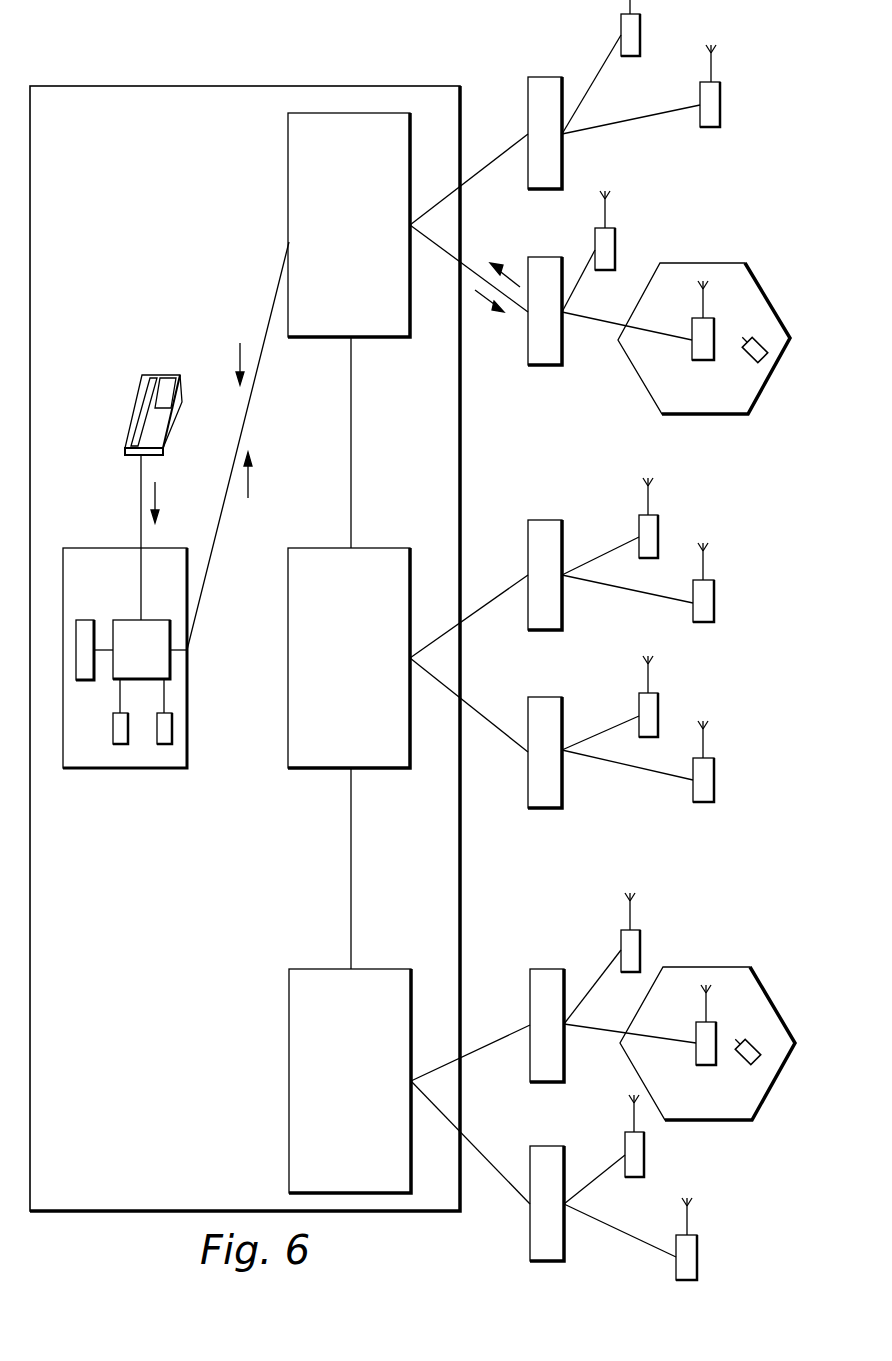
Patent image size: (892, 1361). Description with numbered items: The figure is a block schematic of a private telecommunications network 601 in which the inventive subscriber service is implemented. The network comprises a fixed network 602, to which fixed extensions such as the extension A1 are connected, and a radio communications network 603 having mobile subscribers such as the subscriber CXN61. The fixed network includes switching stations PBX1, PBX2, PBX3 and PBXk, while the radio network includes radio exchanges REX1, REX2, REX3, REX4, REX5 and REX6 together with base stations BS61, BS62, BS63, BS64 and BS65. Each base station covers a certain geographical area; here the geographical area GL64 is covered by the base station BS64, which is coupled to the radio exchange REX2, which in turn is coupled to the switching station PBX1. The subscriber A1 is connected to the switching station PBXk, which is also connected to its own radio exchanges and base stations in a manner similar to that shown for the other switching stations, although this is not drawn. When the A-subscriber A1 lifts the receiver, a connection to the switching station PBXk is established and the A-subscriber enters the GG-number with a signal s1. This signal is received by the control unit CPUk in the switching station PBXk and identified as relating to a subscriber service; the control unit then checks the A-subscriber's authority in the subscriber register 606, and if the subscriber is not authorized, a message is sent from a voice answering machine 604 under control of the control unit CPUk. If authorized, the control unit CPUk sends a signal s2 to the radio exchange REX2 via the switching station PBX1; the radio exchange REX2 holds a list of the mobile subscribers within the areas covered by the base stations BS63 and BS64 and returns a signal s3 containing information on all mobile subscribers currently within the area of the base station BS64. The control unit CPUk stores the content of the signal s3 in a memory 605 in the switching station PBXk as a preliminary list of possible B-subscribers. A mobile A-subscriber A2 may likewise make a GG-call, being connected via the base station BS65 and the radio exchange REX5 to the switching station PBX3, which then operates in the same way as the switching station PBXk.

The private telecommunications network 601 is at (165, 45).
The fixed network 602 is at (284, 85).
The radio communications network 603 is at (512, 43).
The voice answering machine 604 is at (120, 745).
The memory 605 is at (85, 621).
The subscriber register 606 is at (164, 745).
The switching station PBX1 is at (357, 381).
The switching station PBX2 is at (408, 758).
The switching station PBX3 is at (409, 1086).
The switching station PBXk is at (80, 769).
The control unit CPUk is at (172, 662).
The extension (fixed A-subscriber) A1 is at (157, 372).
The mobile A-subscriber A2 is at (756, 1060).
The signal s1 is at (164, 504).
The signal s2 is at (381, 394).
The signal s3 is at (364, 313).
The radio exchange REX1 is at (545, 191).
The radio exchange REX2 is at (545, 367).
The radio exchange REX3 is at (543, 519).
The radio exchange REX4 is at (545, 809).
The radio exchange REX5 is at (544, 969).
The radio exchange REX6 is at (544, 1146).
The base station BS61 is at (641, 30).
The base station BS62 is at (720, 105).
The base station BS63 is at (615, 241).
The base station BS64 is at (703, 361).
The base station BS65 is at (706, 1066).
The geographical area GL64 is at (731, 263).
The mobile subscriber CXN61 is at (760, 360).